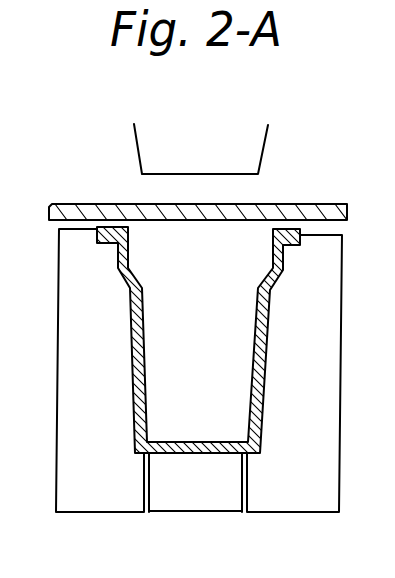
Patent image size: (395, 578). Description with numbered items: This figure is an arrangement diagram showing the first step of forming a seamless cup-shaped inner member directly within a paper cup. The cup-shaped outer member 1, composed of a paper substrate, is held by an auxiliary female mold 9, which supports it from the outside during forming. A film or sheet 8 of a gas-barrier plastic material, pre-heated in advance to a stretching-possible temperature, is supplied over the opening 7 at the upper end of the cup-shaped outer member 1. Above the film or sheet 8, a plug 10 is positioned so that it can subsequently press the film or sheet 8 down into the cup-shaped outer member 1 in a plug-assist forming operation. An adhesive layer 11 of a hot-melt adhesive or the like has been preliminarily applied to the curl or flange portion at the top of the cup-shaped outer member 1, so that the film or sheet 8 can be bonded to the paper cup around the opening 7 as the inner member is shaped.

The cup-shaped outer member 1 is at (263, 342).
The opening 7 is at (200, 335).
The film or sheet 8 is at (336, 204).
The auxiliary female mold 9 is at (199, 370).
The plug 10 is at (201, 149).
The adhesive layer 11 is at (56, 229).